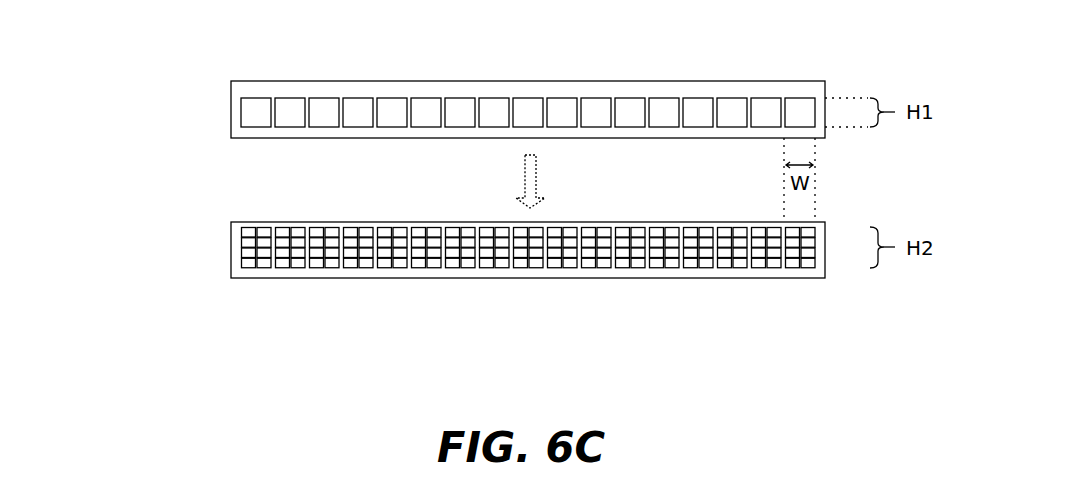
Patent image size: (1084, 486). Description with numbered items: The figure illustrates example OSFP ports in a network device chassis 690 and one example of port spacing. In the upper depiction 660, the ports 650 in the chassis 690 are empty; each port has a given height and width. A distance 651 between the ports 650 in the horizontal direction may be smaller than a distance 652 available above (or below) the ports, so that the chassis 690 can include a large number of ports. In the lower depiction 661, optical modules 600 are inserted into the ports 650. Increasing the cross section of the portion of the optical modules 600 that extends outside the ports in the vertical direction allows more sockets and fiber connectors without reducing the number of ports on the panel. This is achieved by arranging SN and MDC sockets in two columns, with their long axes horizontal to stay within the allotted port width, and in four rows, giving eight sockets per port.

The empty-port state 660 is at (509, 84).
The populated-port state 661 is at (491, 269).
The network device chassis 690 is at (308, 81).
The ports 650 is at (630, 98).
The distance between ports in the horizontal direction 651 is at (795, 117).
The distance available above ports 652 is at (803, 110).
The optical modules 600 is at (800, 268).